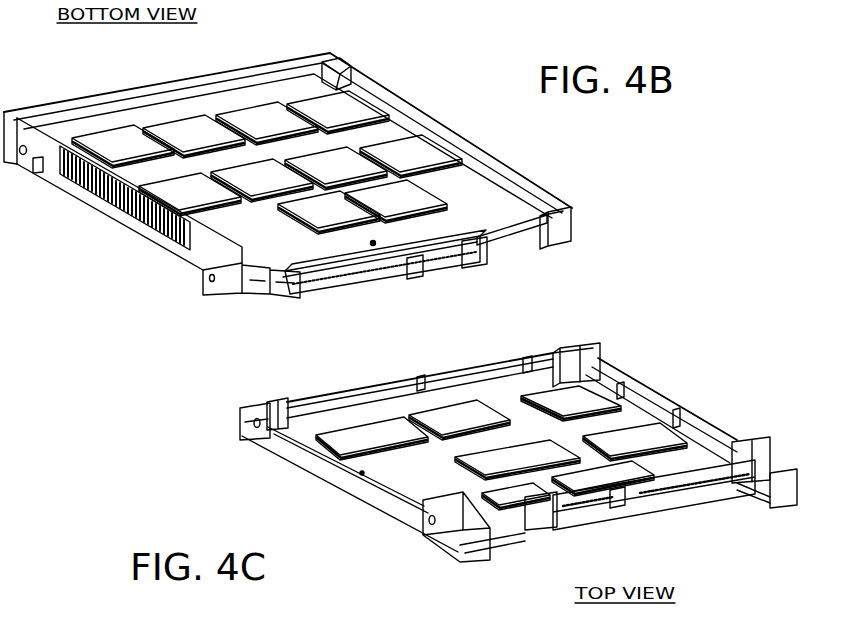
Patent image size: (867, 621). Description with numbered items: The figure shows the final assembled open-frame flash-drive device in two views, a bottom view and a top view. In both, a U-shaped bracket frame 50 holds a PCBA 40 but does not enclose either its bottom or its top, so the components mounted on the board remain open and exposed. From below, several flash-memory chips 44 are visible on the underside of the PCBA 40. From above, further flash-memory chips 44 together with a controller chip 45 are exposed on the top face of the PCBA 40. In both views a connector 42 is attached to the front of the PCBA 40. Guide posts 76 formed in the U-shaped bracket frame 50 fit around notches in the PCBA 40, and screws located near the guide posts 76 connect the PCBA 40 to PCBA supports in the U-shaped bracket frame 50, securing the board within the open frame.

In FIG. 4B, the PCBA 40 is at (278, 247).
In FIG. 4C, the PCBA 40 is at (438, 486).
In FIG. 4B, the connector 42 is at (358, 278).
In FIG. 4C, the connector 42 is at (665, 497).
In FIG. 4B, the flash-memory chips 44 is at (210, 142).
In FIG. 4C, the flash-memory chips 44 is at (582, 409).
In FIG. 4C, the controller chip 45 is at (378, 425).
In FIG. 4B, the U-shaped bracket frame 50 is at (182, 255).
In FIG. 4C, the U-shaped bracket frame 50 is at (381, 505).
In FIG. 4C, the guide posts 76 is at (582, 352).